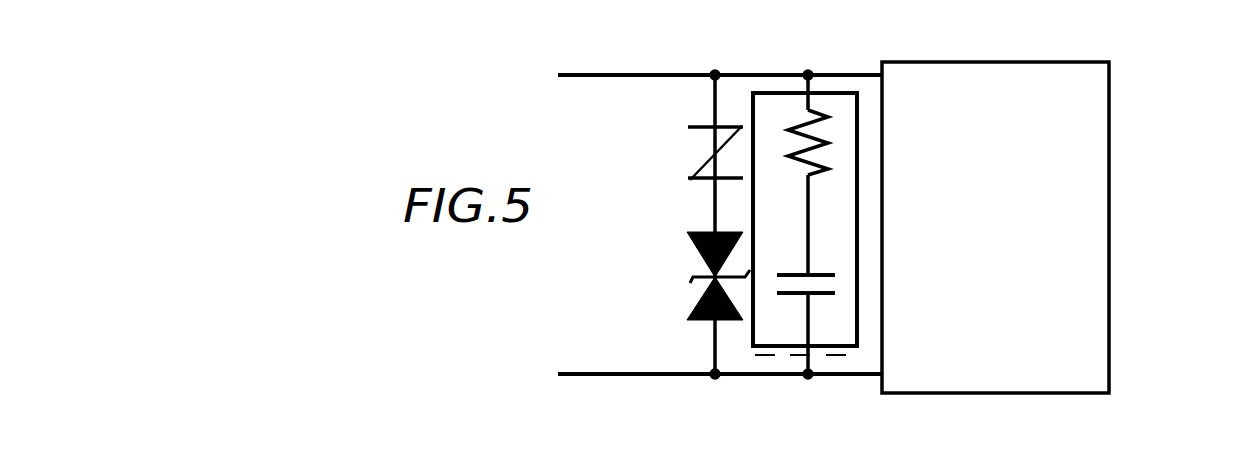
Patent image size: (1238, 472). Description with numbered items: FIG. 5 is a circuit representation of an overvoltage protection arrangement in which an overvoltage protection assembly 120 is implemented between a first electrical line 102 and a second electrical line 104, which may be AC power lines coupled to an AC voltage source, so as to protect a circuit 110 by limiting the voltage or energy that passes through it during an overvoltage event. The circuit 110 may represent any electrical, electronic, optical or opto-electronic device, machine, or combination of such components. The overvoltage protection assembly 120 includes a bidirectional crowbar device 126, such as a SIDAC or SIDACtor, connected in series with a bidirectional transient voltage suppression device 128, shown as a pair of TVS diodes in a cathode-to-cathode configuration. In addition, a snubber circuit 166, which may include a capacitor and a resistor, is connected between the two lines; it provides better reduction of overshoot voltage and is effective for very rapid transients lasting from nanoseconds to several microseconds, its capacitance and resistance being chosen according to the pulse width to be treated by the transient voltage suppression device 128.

The overvoltage protection assembly 120 is at (565, 33).
The first electrical line 102 is at (628, 74).
The second electrical line 104 is at (573, 369).
The crowbar device 126 is at (712, 128).
The transient voltage suppression device 128 is at (705, 266).
The RC snubber circuit 166 is at (812, 90).
The circuit 110 is at (1017, 240).